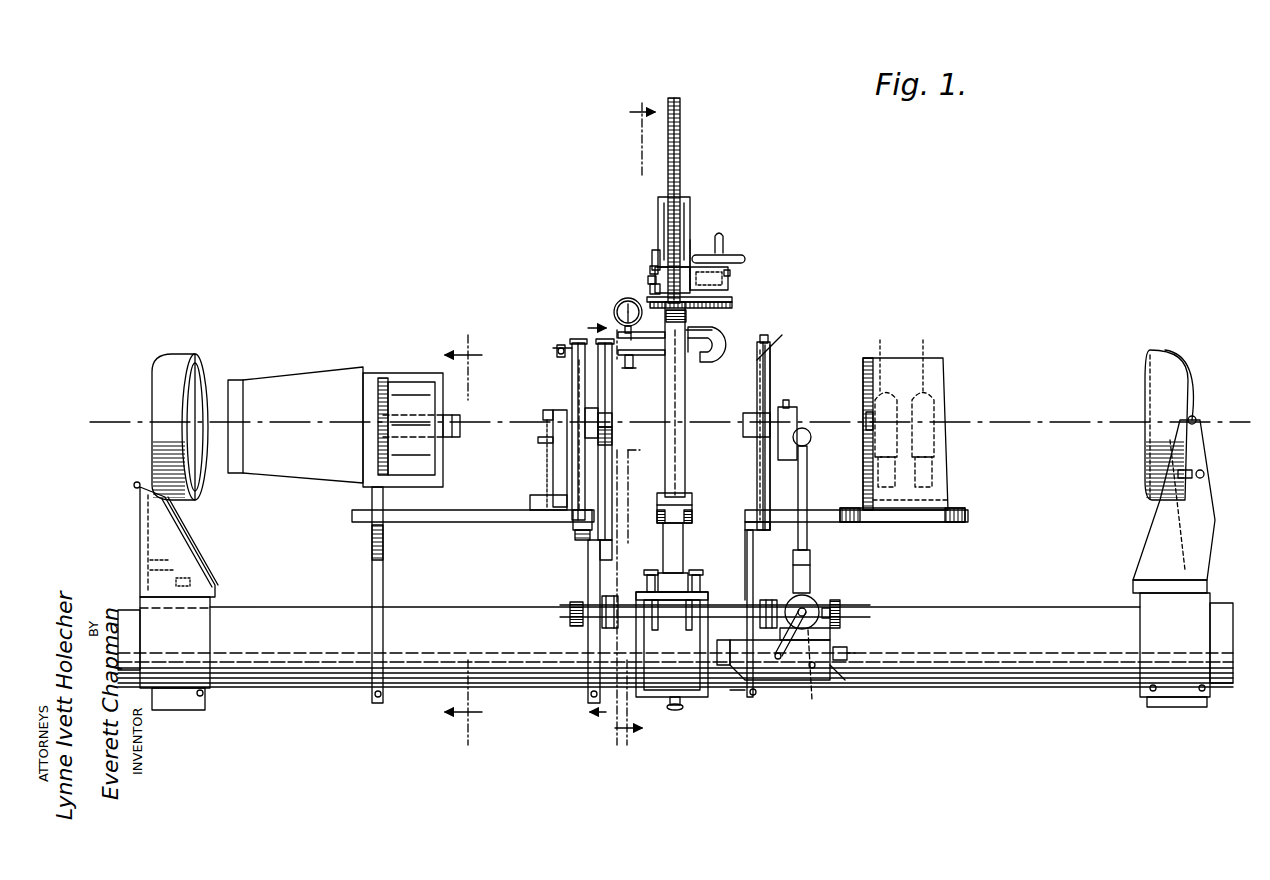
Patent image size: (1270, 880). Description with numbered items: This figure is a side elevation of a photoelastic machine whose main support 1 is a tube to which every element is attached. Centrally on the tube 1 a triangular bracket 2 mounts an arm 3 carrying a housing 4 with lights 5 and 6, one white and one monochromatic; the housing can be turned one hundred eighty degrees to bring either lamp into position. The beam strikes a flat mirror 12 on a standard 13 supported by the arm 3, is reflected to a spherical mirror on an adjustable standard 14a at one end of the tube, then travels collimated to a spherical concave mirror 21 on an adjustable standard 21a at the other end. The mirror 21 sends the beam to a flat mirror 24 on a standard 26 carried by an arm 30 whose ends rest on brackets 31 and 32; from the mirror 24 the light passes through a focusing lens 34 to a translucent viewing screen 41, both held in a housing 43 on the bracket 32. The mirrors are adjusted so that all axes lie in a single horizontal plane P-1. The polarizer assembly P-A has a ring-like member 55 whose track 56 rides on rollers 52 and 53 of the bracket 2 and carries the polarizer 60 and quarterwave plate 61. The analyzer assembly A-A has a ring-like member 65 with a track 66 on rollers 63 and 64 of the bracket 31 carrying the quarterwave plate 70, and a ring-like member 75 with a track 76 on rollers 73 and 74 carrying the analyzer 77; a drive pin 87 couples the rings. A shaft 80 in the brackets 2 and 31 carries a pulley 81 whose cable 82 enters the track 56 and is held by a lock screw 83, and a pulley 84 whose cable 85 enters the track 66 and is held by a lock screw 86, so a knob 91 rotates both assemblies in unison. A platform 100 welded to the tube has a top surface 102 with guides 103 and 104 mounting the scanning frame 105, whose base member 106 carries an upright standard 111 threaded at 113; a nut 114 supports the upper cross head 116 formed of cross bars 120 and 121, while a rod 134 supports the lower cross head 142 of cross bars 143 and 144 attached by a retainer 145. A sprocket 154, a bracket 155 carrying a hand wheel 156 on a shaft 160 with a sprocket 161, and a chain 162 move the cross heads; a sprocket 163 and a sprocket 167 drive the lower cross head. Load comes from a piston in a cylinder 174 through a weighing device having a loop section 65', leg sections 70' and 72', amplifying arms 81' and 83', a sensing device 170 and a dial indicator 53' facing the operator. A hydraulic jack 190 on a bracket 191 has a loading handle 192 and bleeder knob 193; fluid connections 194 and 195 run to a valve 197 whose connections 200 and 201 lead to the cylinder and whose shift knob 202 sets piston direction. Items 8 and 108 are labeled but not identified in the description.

The main support 1 is at (296, 684).
The bracket 2 is at (746, 545).
The arm 3 is at (853, 535).
The housing 4 is at (946, 375).
The light 5 is at (922, 357).
The light 6 is at (729, 532).
The section line 8 is at (471, 540).
The flat mirror 12 is at (790, 406).
The standard 13 is at (808, 480).
The adjustable standard 14a is at (1203, 458).
The spherical concave mirror 21 is at (205, 372).
The adjustable standard 21a is at (140, 530).
The flat mirror 24 is at (545, 412).
The standard 26 is at (545, 494).
The arm 30 is at (447, 524).
The bracket 31 is at (588, 545).
The bracket 32 is at (383, 583).
The focusing lens 34 is at (460, 424).
The translucent viewing screen 41 is at (400, 380).
The housing 43 is at (300, 367).
The roller 52 is at (745, 430).
The roller 53 is at (745, 528).
The dial indicator 53' is at (598, 317).
The ring-like member 55 is at (772, 356).
The track 56 is at (772, 348).
The polarizer 60 is at (774, 370).
The quarterwave plate 61 is at (757, 382).
The roller 63 is at (600, 552).
The roller 64 is at (598, 412).
The ring-like member 65 is at (622, 417).
The loop section 65' is at (718, 321).
The peripheral track 66 is at (612, 380).
The quarterwave plate 70 is at (622, 435).
The leg section 70' is at (687, 319).
The leg section 72' is at (699, 359).
The roller 73 is at (573, 522).
The roller 74 is at (553, 445).
The ring-like member 75 is at (572, 380).
The peripheral track 76 is at (574, 340).
The analyzer 77 is at (578, 395).
The shaft 80 is at (720, 608).
The pulley 81 is at (767, 613).
The amplifying arm 81' is at (641, 343).
The cable 82 is at (770, 545).
The lock screw 83 is at (775, 318).
The amplifying arm 83' is at (642, 364).
The pulley 84 is at (612, 600).
The cable 85 is at (588, 578).
The lock screw 86 is at (603, 340).
The drive pin 87 is at (556, 352).
The knob 91 is at (570, 606).
The platform 100 is at (692, 700).
The top surface 102 is at (702, 598).
The guide 103 is at (655, 603).
The guide 104 is at (689, 603).
The scanning frame 105 is at (686, 420).
The base member 106 is at (684, 560).
The screw 108 is at (650, 574).
The upright standard 111 is at (685, 455).
The threads 113 is at (690, 215).
The nut 114 is at (652, 292).
The upper cross head 116 is at (650, 258).
The cross bar 120 is at (652, 268).
The cross bar 121 is at (692, 262).
The rod 134 is at (682, 108).
The lower cross head 142 is at (652, 490).
The cross bar 143 is at (657, 522).
The cross bar 144 is at (692, 516).
The retainer 145 is at (686, 500).
The sprocket 154 is at (643, 315).
The bracket 155 is at (728, 286).
The hand wheel 156 is at (745, 257).
The rotatable shaft 160 is at (724, 245).
The sprocket 161 is at (732, 299).
The chain 162 is at (720, 307).
The sprocket 163 is at (650, 280).
The sprocket 167 is at (730, 273).
The sensing device 170 is at (722, 356).
The cylinder 174 is at (686, 197).
The hydraulic jack 190 is at (818, 604).
The bracket 191 is at (830, 634).
The loading handle 192 is at (811, 439).
The bleeder knob 193 is at (840, 606).
The fluid connection 194 is at (780, 662).
The fluid connection 195 is at (813, 677).
The valve 197 is at (772, 680).
The connection 200 is at (730, 690).
The connection 201 is at (832, 678).
The shift knob 202 is at (848, 651).
The analyzer assembly A-A is at (553, 348).
The polarizer assembly P-A is at (782, 335).
The horizontal plane P-1 is at (97, 420).